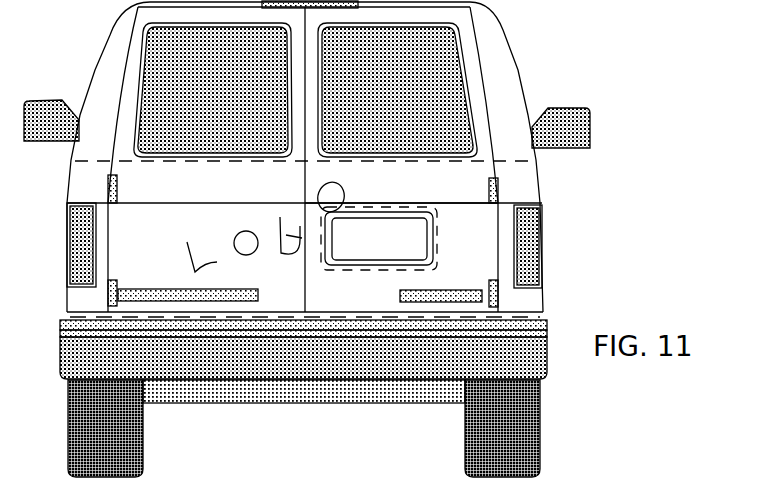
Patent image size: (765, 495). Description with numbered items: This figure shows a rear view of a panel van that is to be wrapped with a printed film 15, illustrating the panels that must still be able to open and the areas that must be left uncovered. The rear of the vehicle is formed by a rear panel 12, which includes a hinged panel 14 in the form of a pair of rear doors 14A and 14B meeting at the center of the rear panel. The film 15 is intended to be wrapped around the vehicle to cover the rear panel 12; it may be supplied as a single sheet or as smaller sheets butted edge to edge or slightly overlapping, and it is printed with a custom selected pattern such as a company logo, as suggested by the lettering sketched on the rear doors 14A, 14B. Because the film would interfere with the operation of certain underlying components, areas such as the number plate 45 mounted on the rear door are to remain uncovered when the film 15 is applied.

The rear panel 12 is at (505, 97).
The hinged panel 14 is at (477, 177).
The rear door 14A is at (273, 290).
The rear door 14B is at (372, 400).
The film 15 is at (480, 222).
The number plate 45 is at (378, 315).